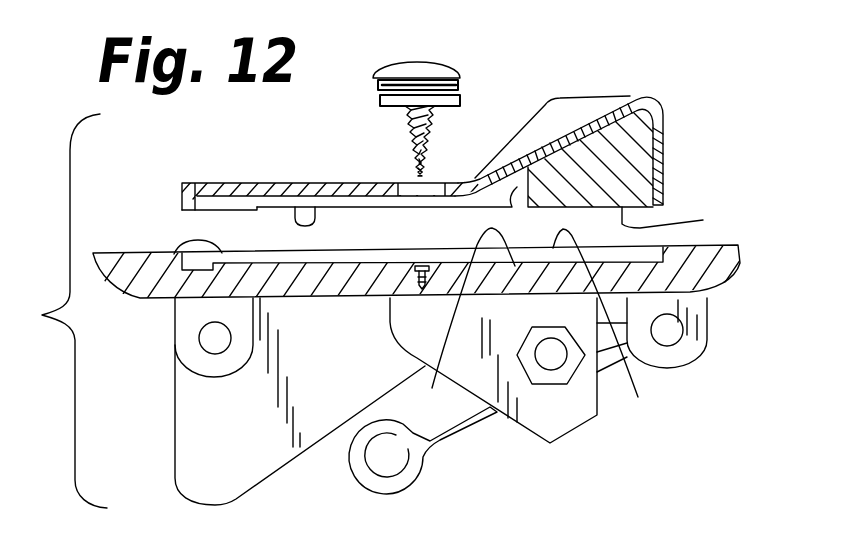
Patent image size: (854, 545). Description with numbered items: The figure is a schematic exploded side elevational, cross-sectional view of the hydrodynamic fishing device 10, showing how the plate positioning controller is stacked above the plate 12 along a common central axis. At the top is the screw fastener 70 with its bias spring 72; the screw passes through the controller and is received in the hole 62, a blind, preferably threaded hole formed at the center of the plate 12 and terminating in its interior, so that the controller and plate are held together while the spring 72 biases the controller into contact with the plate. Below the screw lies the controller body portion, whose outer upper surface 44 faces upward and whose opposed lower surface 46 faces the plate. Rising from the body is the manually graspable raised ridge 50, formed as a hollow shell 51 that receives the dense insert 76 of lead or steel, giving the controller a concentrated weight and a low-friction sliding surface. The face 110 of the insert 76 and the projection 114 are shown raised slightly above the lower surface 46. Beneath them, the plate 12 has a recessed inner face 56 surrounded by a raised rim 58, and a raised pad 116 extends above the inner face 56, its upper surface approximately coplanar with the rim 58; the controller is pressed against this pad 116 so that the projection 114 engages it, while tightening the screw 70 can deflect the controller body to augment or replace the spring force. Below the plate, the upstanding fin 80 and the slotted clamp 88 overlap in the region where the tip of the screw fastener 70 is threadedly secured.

The hydrodynamic fishing device 10 is at (487, 90).
The plate 12 is at (668, 180).
The upper surface 44 is at (458, 182).
The lower surface 46 is at (283, 186).
The raised ridge 50 is at (660, 97).
The hollow shell 51 is at (505, 193).
The recessed inner face 56 is at (466, 323).
The raised rim 58 is at (607, 327).
The hole 62 is at (422, 266).
The screw fastener 70 is at (393, 72).
The bias spring 72 is at (380, 85).
The insert 76 is at (630, 150).
The upstanding fin 80 is at (323, 412).
The slotted clamp 88 is at (587, 405).
The face of insert 110 is at (684, 216).
The projection 114 is at (245, 212).
The raised pad 116 is at (178, 253).